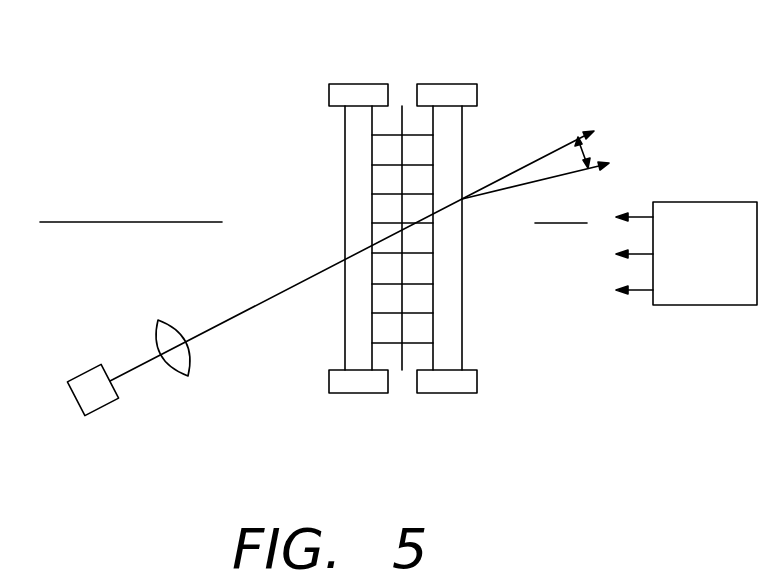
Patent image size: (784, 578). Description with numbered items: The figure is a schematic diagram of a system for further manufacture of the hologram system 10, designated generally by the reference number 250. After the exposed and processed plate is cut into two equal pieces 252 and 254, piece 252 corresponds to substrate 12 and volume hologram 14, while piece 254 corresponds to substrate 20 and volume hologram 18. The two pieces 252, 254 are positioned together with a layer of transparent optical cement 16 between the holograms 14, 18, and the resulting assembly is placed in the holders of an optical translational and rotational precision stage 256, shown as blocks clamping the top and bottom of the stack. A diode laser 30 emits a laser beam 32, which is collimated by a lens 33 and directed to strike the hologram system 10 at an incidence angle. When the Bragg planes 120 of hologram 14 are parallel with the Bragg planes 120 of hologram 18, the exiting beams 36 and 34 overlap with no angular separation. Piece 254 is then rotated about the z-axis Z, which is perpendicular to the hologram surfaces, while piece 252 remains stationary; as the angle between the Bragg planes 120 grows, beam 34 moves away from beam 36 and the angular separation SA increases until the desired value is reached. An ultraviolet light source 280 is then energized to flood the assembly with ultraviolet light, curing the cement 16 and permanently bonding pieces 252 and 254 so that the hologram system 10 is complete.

The hologram system 10 is at (344, 183).
The substrate 12 is at (348, 313).
The volume hologram 14 is at (382, 327).
The transparent optical cement 16 is at (403, 106).
The volume hologram 18 is at (421, 299).
The substrate 20 is at (457, 325).
The diode laser 30 is at (83, 372).
The laser beam 32 is at (221, 322).
The lens 33 is at (166, 317).
The beam 34 is at (519, 187).
The beam 36 is at (516, 170).
The Bragg planes 120 is at (382, 196).
The system for further manufacture of the hologram system 250 is at (111, 431).
The piece 252 is at (353, 128).
The piece 254 is at (447, 132).
The optical translational and rotational precision stage 256 is at (340, 84).
The ultraviolet light source 280 is at (716, 202).
The angular separation SA is at (589, 151).
The z-axis Z is at (117, 222).